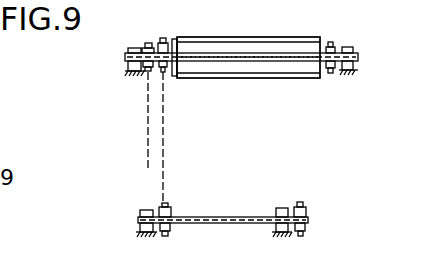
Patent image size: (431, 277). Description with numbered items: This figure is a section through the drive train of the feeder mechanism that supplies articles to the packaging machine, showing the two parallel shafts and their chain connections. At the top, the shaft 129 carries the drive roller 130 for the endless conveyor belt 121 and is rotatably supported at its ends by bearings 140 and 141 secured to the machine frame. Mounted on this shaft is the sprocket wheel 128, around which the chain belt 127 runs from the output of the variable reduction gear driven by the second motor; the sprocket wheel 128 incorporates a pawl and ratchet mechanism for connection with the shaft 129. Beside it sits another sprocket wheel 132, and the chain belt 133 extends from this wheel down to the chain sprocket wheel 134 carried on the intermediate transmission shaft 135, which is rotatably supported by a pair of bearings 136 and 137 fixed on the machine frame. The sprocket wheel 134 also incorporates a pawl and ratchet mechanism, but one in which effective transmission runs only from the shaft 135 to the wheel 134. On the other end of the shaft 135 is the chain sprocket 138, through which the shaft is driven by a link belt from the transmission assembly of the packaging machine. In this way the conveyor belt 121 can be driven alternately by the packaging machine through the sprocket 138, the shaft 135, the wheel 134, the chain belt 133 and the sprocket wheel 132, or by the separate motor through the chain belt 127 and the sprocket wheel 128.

The endless conveyor belt 121 is at (270, 38).
The chain belt 127 is at (148, 123).
The sprocket wheel 128 is at (144, 46).
The shaft 129 is at (258, 60).
The drive roller 130 is at (226, 46).
The sprocket wheel 132 is at (163, 38).
The chain belt 133 is at (163, 123).
The chain sprocket wheel 134 is at (168, 205).
The intermediate transmission shaft 135 is at (240, 217).
The bearing 136 is at (143, 210).
The bearing 137 is at (284, 208).
The chain sprocket 138 is at (306, 210).
The bearing 140 is at (128, 57).
The bearing 141 is at (349, 47).